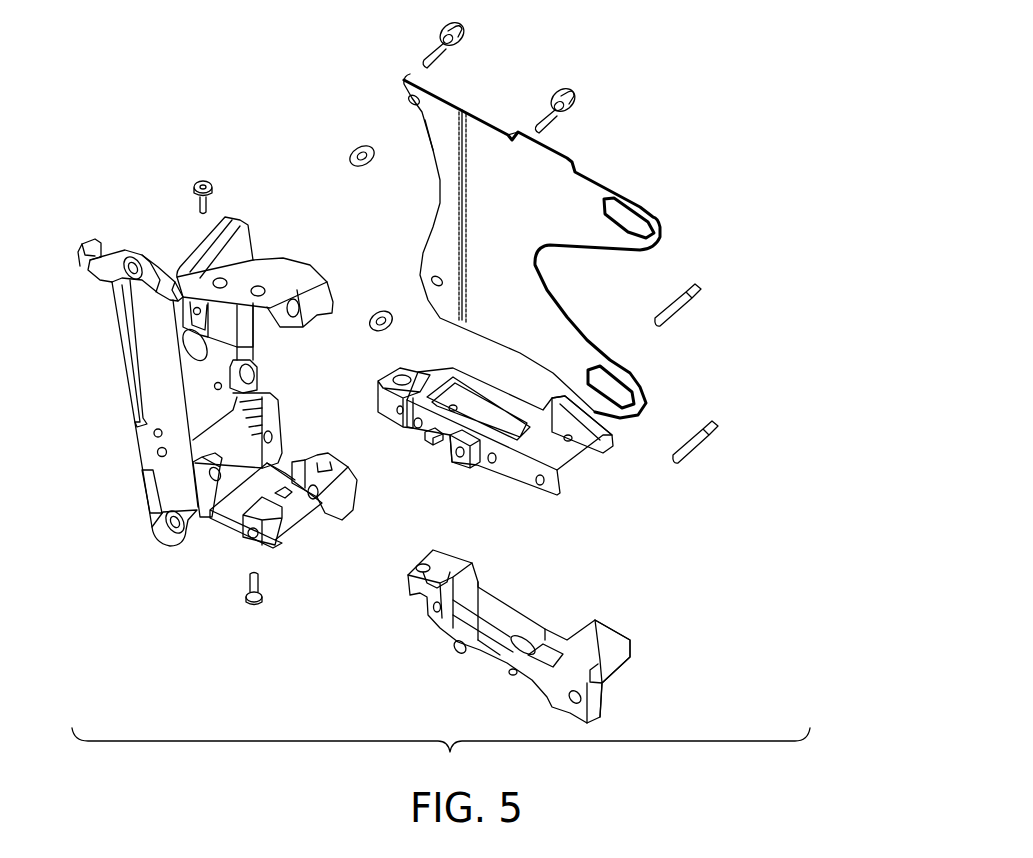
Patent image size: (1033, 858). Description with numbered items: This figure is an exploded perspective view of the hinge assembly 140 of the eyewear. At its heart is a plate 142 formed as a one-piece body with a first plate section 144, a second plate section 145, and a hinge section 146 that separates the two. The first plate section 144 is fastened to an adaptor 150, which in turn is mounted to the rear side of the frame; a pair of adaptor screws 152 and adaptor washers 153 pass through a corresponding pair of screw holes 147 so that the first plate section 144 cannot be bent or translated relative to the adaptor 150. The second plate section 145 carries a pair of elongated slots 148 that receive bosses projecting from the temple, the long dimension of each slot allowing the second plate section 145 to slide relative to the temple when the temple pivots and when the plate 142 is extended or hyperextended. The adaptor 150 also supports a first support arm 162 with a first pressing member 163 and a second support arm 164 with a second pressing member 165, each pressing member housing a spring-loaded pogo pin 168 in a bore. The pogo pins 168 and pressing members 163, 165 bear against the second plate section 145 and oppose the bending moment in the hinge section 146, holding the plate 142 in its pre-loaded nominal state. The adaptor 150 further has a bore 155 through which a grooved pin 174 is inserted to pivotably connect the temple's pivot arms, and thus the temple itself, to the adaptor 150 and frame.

The hinge assembly 140 is at (232, 95).
The plate 142 is at (578, 167).
The first plate section 144 is at (432, 146).
The second plate section 145 is at (491, 158).
The hinge section 146 is at (463, 200).
The screw holes 147 is at (406, 100).
The elongated slots 148 is at (652, 222).
The adaptor 150 is at (145, 349).
The adaptor screws 152 is at (437, 48).
The adaptor washers 153 is at (350, 158).
The bore 155 is at (217, 282).
The first support arm 162 is at (528, 456).
The first pressing member 163 is at (605, 445).
The second support arm 164 is at (488, 655).
The second pressing member 165 is at (615, 630).
The spring-loaded pogo pins 168 is at (680, 307).
The grooved pin 174 is at (193, 186).